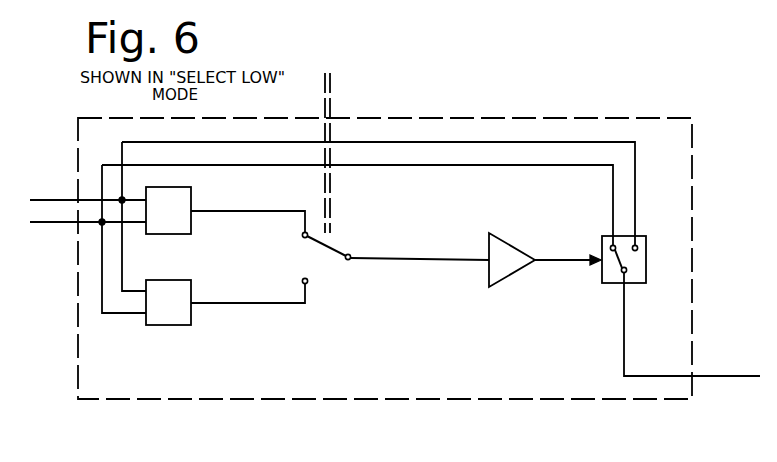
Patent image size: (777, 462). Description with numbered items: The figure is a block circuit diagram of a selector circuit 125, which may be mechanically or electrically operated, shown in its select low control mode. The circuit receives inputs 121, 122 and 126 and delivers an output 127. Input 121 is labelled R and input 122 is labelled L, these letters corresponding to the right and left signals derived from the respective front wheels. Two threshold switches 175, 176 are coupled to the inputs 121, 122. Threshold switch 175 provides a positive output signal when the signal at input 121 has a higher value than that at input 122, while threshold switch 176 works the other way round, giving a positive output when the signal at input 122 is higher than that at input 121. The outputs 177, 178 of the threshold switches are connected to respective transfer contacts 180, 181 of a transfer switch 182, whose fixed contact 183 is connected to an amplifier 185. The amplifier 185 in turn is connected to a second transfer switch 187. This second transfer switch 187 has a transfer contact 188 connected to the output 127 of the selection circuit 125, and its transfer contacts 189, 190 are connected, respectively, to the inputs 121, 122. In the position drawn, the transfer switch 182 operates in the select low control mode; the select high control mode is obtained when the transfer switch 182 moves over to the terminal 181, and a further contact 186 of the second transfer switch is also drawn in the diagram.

The input 121 is at (78, 200).
The input 122 is at (78, 223).
The selector circuit 125 is at (400, 399).
The input 126 is at (328, 100).
The output 127 is at (692, 376).
The threshold switch 175 is at (191, 233).
The threshold switch 176 is at (191, 324).
The output 177 is at (191, 208).
The output 178 is at (191, 300).
The transfer contact 180 is at (303, 239).
The transfer contact 181 is at (304, 283).
The transfer switch 182 is at (329, 246).
The fixed contact 183 is at (350, 260).
The amplifier 185 is at (513, 273).
The switch contact 186 is at (598, 264).
The second transfer switch 187 is at (646, 283).
The transfer contact 188 is at (646, 262).
The transfer contact 189 is at (640, 238).
The transfer contact 190 is at (602, 240).